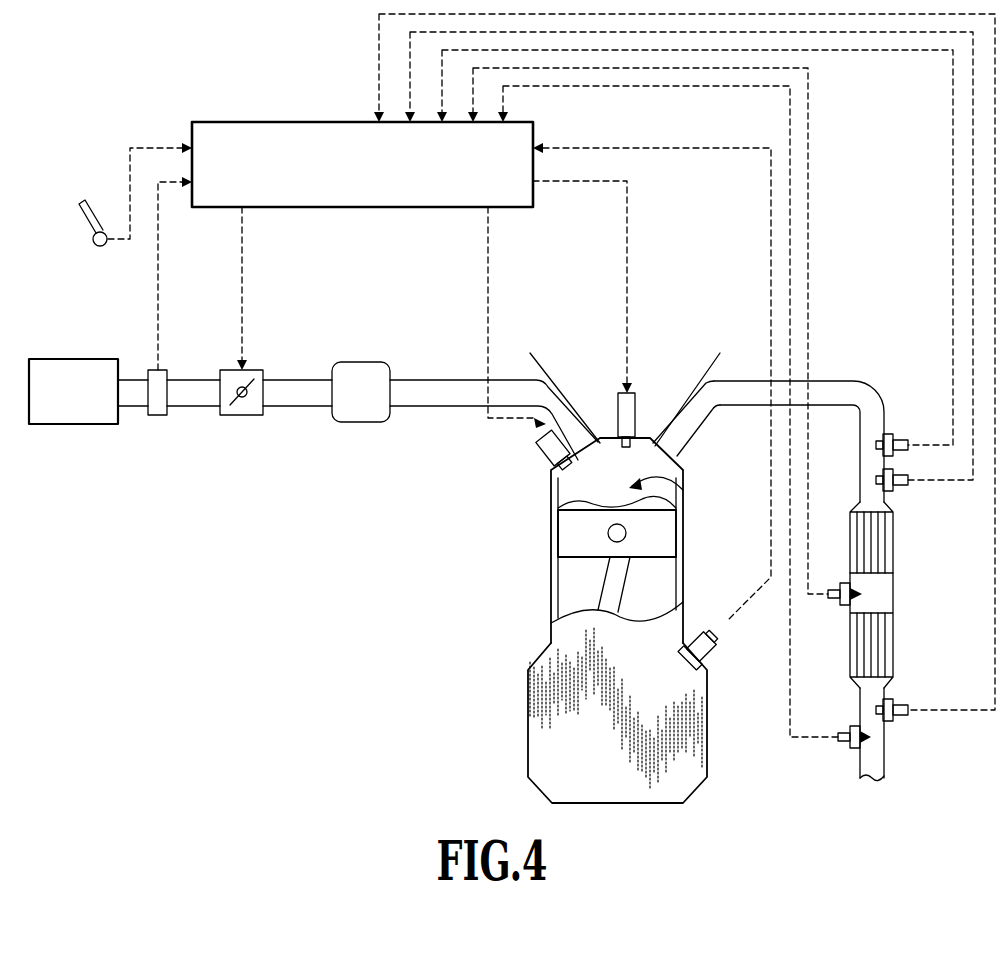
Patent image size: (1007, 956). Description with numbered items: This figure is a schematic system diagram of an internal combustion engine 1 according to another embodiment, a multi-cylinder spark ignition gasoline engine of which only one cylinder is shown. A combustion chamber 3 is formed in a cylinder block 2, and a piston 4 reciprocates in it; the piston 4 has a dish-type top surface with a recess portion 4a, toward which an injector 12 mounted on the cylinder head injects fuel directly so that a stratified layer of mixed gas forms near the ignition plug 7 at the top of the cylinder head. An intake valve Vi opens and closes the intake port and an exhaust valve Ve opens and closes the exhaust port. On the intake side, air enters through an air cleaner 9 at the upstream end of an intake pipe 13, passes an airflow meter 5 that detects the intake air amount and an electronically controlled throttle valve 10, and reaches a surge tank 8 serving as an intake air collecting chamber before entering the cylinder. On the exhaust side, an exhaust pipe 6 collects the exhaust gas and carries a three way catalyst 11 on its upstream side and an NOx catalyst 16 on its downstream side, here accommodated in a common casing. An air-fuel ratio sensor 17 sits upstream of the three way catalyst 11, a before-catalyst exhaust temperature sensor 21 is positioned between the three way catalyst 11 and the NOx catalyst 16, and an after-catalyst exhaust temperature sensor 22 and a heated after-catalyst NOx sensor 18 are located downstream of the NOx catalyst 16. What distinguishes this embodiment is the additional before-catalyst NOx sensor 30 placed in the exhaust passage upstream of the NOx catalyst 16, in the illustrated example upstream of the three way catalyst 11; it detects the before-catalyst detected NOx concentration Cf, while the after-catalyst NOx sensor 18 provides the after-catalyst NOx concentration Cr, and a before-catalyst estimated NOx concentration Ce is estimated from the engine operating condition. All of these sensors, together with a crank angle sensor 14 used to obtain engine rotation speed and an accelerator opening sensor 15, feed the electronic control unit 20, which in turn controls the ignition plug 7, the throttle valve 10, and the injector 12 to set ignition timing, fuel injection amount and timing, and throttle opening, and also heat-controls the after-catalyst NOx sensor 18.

The internal combustion engine 1 is at (331, 582).
The cylinder block 2 is at (552, 664).
The combustion chamber 3 is at (684, 489).
The piston 4 is at (574, 538).
The recess portion 4a is at (590, 503).
The airflow meter 5 is at (157, 415).
The exhaust pipe 6 is at (862, 381).
The ignition plug 7 is at (618, 390).
The surge tank 8 is at (360, 422).
The air cleaner 9 is at (72, 424).
The throttle valve 10 is at (240, 415).
The three way catalyst 11 is at (893, 553).
The injector 12 is at (538, 453).
The intake pipe 13 is at (322, 406).
The crank angle sensor 14 is at (714, 658).
The accelerator opening sensor 15 is at (99, 253).
The NOx catalyst 16 is at (893, 651).
The air-fuel ratio sensor 17 is at (908, 484).
The after-catalyst NOx sensor 18 is at (900, 718).
The electronic control unit 20 is at (291, 122).
The before-catalyst exhaust temperature sensor 21 is at (825, 606).
The after-catalyst exhaust temperature sensor 22 is at (831, 748).
The before-catalyst NOx sensor 30 is at (893, 434).
The intake valve Vi is at (532, 354).
The exhaust valve Ve is at (718, 354).
The before-catalyst estimated NOx concentration Ce is at (730, 426).
The before-catalyst detected NOx concentration Cf is at (930, 427).
The after-catalyst NOx concentration Cr is at (931, 724).